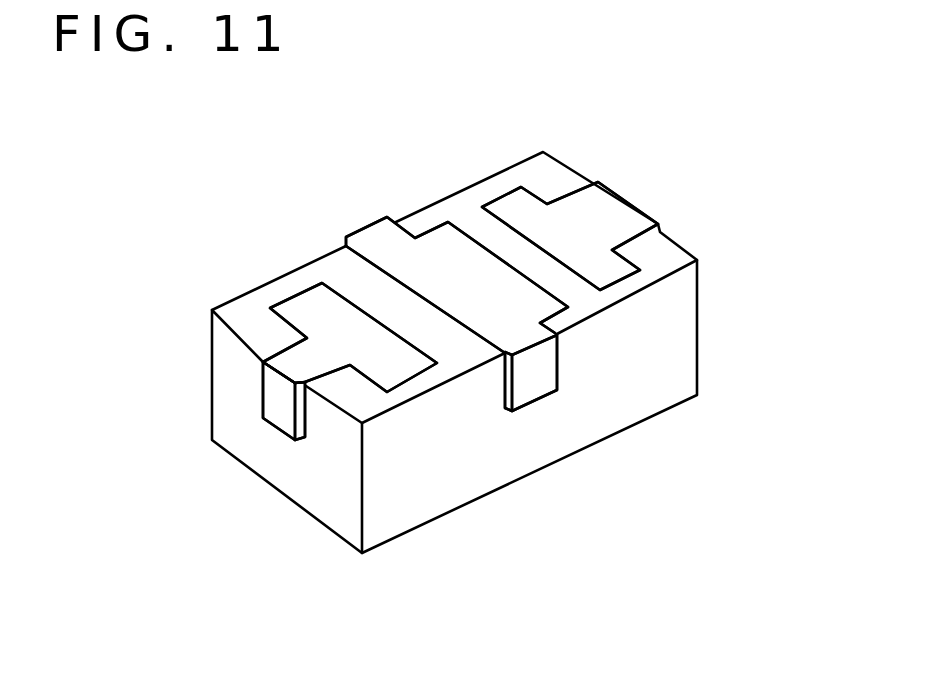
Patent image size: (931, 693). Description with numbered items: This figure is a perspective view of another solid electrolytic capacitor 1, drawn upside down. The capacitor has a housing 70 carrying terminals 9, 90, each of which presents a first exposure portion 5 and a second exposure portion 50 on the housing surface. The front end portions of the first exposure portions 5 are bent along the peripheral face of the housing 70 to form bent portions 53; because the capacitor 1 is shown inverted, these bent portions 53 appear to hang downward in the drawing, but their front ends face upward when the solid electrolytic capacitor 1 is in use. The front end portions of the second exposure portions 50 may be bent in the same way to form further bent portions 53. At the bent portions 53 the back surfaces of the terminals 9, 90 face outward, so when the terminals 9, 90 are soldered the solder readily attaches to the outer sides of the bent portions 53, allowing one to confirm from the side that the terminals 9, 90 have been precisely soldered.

The solid electrolytic capacitor 1 is at (733, 284).
The housing 70 is at (683, 340).
The terminal 9 is at (320, 582).
The terminal 90 is at (288, 146).
The first exposure portion 5 is at (373, 238).
The second exposure portion 50 is at (440, 237).
The bent portion 53 is at (268, 402).